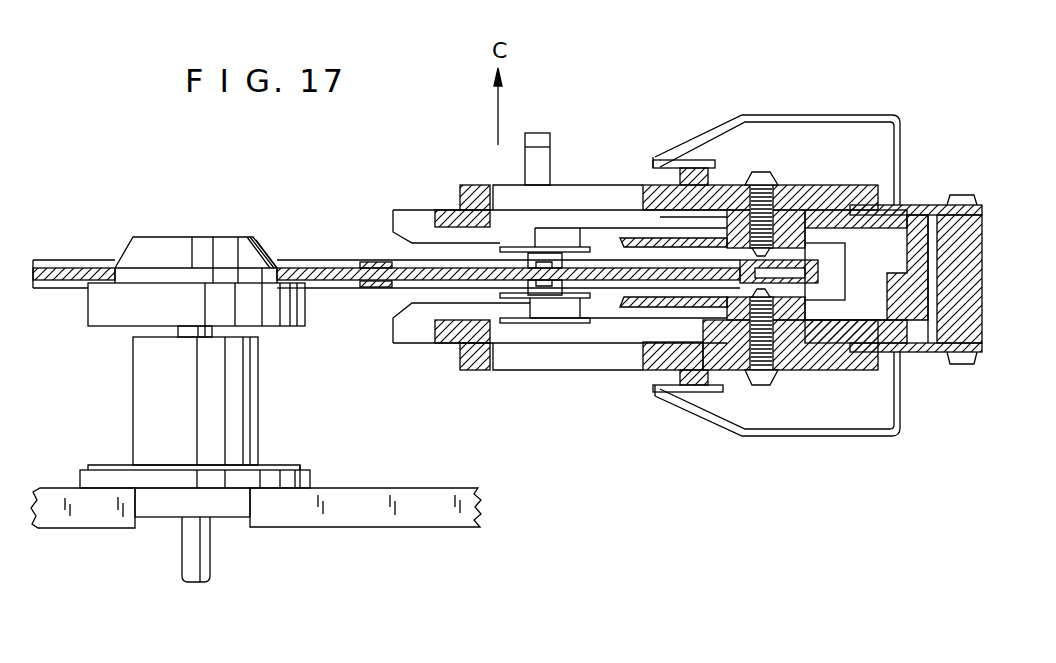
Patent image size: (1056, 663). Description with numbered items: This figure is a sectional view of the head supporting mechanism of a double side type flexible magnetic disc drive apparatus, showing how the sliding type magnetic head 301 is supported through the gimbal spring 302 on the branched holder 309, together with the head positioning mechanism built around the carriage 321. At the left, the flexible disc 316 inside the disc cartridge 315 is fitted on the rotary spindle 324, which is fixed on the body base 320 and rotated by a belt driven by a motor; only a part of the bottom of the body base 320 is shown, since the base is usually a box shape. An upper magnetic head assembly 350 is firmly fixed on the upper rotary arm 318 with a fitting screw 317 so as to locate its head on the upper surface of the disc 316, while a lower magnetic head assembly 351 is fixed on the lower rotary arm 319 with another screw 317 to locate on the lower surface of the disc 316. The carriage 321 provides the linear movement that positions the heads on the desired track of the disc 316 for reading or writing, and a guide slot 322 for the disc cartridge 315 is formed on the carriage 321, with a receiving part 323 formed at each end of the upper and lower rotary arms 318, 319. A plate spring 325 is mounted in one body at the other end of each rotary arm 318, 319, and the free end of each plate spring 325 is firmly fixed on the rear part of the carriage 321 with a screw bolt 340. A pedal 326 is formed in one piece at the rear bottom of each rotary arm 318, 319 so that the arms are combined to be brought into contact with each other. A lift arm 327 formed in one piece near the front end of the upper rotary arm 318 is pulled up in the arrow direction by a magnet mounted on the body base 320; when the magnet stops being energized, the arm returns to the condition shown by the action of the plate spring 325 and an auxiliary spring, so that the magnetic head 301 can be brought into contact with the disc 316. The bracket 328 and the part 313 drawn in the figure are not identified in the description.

The sliding type magnetic head 301 is at (540, 255).
The gimbal spring 302 is at (575, 250).
The branched holder 309 is at (790, 240).
The spacer 313 is at (557, 327).
The disc cartridge 315 is at (300, 262).
The flexible disc 316 is at (327, 282).
The fitting screw 317 is at (755, 172).
The upper rotary arm 318 is at (470, 187).
The lower rotary arm 319 is at (477, 360).
The body base 320 is at (405, 512).
The carriage 321 is at (395, 212).
The guide slot 322 is at (418, 246).
The receiving part 323 is at (450, 212).
The rotary spindle 324 is at (185, 237).
The plate spring 325 is at (905, 205).
The pedal 326 is at (887, 286).
The lift arm 327 is at (538, 133).
The bracket 328 is at (808, 116).
The screw bolt 340 is at (965, 195).
The magnetic head assembly 350 is at (668, 228).
The magnetic head assembly 351 is at (690, 392).